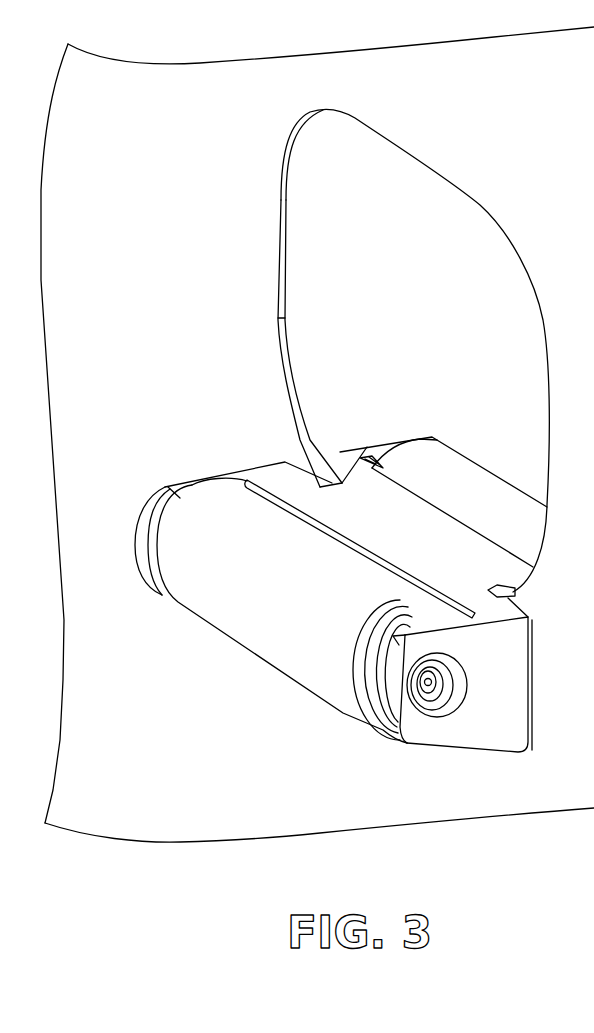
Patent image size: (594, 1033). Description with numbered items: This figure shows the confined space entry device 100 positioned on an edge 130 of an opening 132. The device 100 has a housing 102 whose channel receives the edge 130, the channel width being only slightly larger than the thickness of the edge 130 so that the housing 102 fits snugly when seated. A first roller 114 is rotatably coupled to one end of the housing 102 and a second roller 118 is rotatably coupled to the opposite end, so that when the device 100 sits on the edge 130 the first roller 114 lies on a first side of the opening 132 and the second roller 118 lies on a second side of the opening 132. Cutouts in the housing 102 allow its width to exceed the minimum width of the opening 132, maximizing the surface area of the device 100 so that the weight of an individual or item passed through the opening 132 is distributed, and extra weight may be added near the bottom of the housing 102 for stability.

The device 100 is at (329, 590).
The housing 102 is at (503, 727).
The first roller 114 is at (256, 630).
The second roller 118 is at (447, 463).
The edge 130 is at (299, 437).
The opening 132 is at (333, 317).